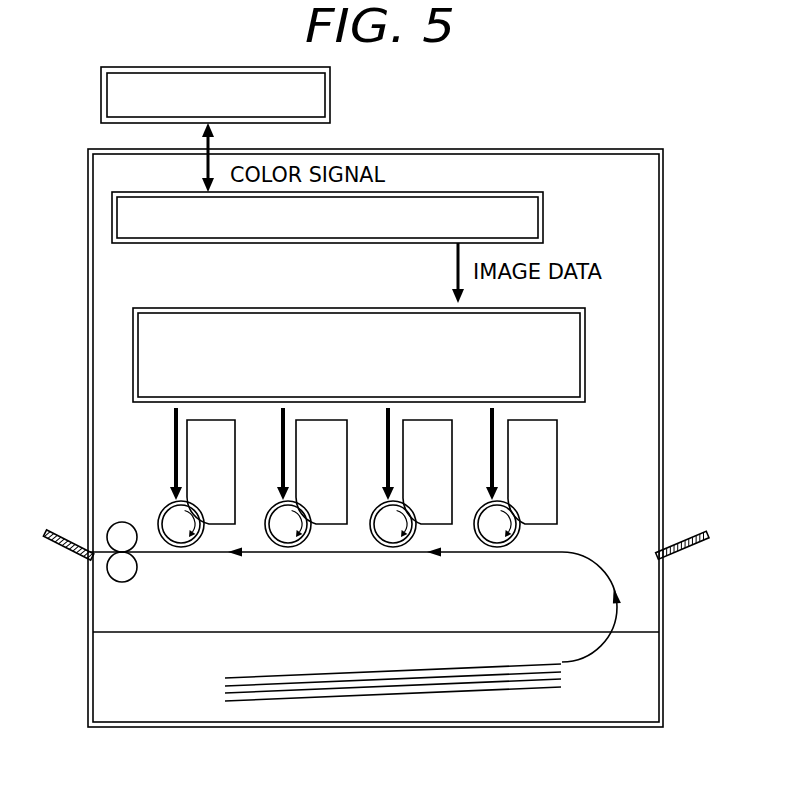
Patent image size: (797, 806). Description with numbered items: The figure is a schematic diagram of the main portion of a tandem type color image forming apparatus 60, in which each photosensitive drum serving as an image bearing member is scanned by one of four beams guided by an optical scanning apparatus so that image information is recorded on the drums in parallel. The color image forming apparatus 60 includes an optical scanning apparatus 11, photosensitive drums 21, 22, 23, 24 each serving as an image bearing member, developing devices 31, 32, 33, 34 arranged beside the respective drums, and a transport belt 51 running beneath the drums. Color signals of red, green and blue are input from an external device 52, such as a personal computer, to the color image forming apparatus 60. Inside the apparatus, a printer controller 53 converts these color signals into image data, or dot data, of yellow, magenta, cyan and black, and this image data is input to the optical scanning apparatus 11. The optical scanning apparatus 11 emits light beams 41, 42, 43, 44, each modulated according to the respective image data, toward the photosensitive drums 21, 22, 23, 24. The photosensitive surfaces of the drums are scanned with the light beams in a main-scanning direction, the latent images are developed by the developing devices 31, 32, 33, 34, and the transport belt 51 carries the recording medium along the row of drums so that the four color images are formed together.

The optical scanning apparatus 11 is at (170, 322).
The photosensitive drum 21 is at (181, 536).
The photosensitive drum 22 is at (288, 536).
The photosensitive drum 23 is at (393, 536).
The photosensitive drum 24 is at (497, 536).
The developing device 31 is at (210, 428).
The developing device 32 is at (321, 428).
The developing device 33 is at (430, 428).
The developing device 34 is at (538, 428).
The light beam 41 is at (175, 452).
The light beam 42 is at (283, 437).
The light beam 43 is at (388, 437).
The light beam 44 is at (492, 437).
The transport belt 51 is at (607, 568).
The external device 52 is at (332, 88).
The printer controller 53 is at (545, 213).
The color image forming apparatus 60 is at (592, 149).